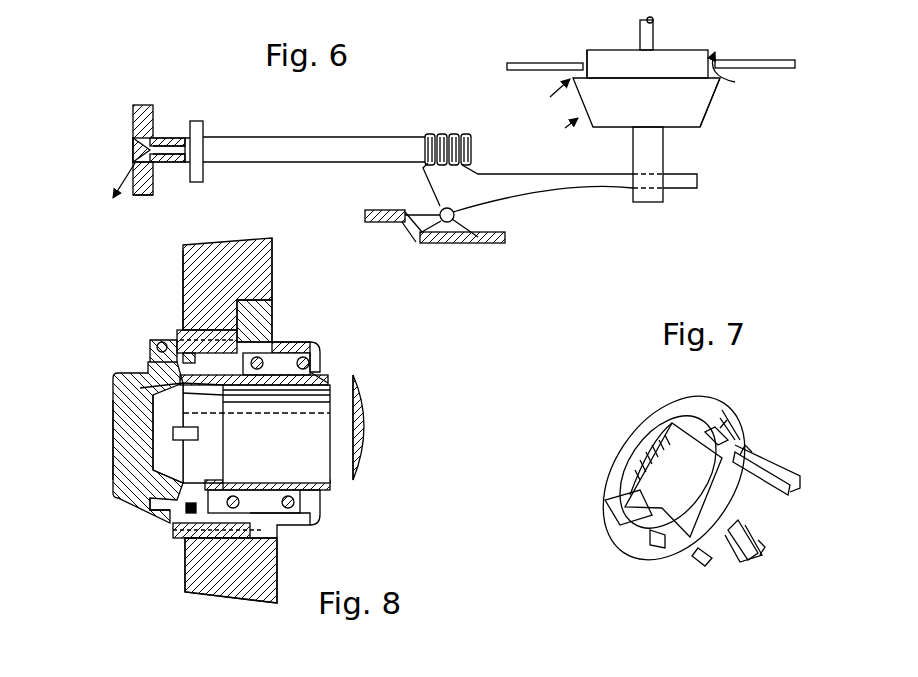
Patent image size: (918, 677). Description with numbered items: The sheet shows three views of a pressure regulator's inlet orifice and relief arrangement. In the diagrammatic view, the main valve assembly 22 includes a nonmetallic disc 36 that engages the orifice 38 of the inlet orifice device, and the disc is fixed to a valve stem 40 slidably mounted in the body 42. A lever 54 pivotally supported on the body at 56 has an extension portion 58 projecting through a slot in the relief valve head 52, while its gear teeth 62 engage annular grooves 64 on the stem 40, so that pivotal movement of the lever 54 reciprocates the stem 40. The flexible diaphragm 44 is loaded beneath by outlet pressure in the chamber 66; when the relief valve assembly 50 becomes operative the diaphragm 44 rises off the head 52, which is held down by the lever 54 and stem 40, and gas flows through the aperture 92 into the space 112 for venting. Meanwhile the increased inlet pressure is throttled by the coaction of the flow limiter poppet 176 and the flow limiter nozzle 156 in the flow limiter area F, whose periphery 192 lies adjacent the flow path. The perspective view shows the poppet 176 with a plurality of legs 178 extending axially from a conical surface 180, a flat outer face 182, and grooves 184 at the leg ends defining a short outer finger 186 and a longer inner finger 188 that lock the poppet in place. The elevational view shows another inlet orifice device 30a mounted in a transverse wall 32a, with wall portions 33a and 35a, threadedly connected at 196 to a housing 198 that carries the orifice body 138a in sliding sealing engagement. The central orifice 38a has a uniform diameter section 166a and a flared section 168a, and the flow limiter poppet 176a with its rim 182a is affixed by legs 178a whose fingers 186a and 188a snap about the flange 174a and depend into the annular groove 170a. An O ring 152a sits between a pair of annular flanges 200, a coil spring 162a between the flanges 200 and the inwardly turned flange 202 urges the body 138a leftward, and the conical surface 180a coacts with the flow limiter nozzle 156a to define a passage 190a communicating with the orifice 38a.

In FIG. 6, the main valve assembly 22 is at (213, 177).
In FIG. 8, the main valve assembly 22 is at (374, 380).
In FIG. 6, the nonmetallic disc 36 is at (198, 130).
In FIG. 8, the nonmetallic disc 36 is at (372, 425).
In FIG. 6, the orifice 38 is at (173, 143).
In FIG. 6, the valve stem 40 is at (363, 146).
In FIG. 6, the body 42 is at (395, 223).
In FIG. 6, the flexible diaphragm 44 is at (533, 63).
In FIG. 6, the relief valve assembly 50 is at (559, 137).
In FIG. 6, the relief valve head 52 is at (650, 200).
In FIG. 6, the lever 54 is at (545, 190).
In FIG. 6, the pivot 56 is at (448, 223).
In FIG. 6, the extension portion 58 is at (698, 182).
In FIG. 6, the gear teeth 62 is at (463, 163).
In FIG. 6, the annular grooves 64 is at (455, 134).
In FIG. 6, the chamber 66 is at (763, 118).
In FIG. 6, the aperture 92 is at (587, 52).
In FIG. 6, the space 112 is at (622, 20).
In FIG. 6, the flow limiter nozzle 156 is at (150, 191).
In FIG. 6, the flow limiter poppet 176 is at (131, 143).
In FIG. 7, the flow limiter poppet 176 is at (650, 405).
In FIG. 6, the flow limiter area F is at (108, 186).
In FIG. 7, the legs 178 is at (730, 548).
In FIG. 7, the conical surface 180 is at (642, 500).
In FIG. 7, the outer face 182 is at (625, 432).
In FIG. 7, the grooves 184 is at (772, 478).
In FIG. 7, the outer finger 186 is at (737, 455).
In FIG. 7, the inner finger 188 is at (718, 432).
In FIG. 7, the periphery 192 is at (612, 522).
In FIG. 8, the inlet orifice device 30a is at (100, 360).
In FIG. 8, the transverse wall 32a is at (212, 262).
In FIG. 8, the housing wall 33a is at (183, 262).
In FIG. 8, the housing wall 35a is at (275, 262).
In FIG. 8, the central orifice 38a is at (280, 392).
In FIG. 8, the orifice body 138a is at (323, 370).
In FIG. 8, the O ring 152a is at (185, 533).
In FIG. 8, the flow limiter nozzle 156a is at (150, 505).
In FIG. 8, the coil spring 162a is at (312, 500).
In FIG. 8, the uniform diameter section 166a is at (275, 480).
In FIG. 8, the flared section 168a is at (200, 495).
In FIG. 8, the annular groove 170a is at (200, 364).
In FIG. 8, the flange 174a is at (175, 356).
In FIG. 8, the flow limiter poppet 176a is at (108, 410).
In FIG. 8, the legs 178a is at (182, 476).
In FIG. 8, the conical surface 180a is at (150, 418).
In FIG. 8, the rim 182a is at (112, 460).
In FIG. 8, the fingers 186a is at (200, 395).
In FIG. 8, the fingers 188a is at (160, 350).
In FIG. 8, the passage 190a is at (140, 388).
In FIG. 8, the threaded connection 196 is at (180, 330).
In FIG. 8, the housing 198 is at (265, 315).
In FIG. 8, the annular flanges 200 is at (182, 515).
In FIG. 8, the inwardly turned flange 202 is at (317, 345).